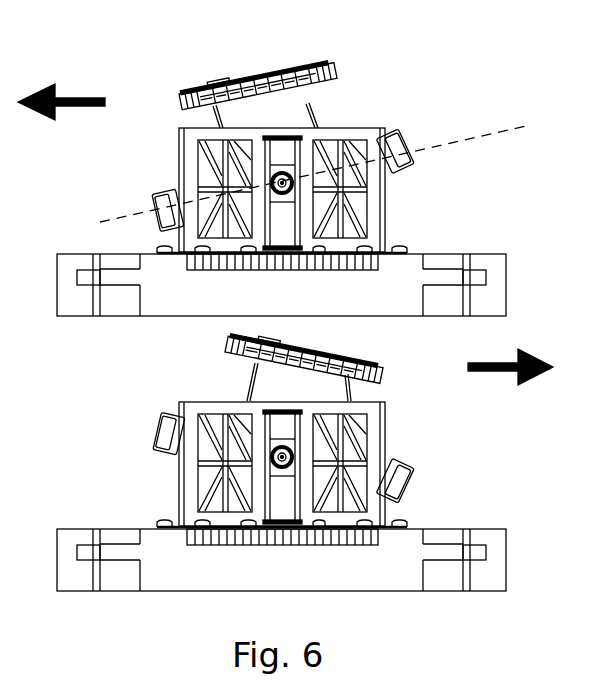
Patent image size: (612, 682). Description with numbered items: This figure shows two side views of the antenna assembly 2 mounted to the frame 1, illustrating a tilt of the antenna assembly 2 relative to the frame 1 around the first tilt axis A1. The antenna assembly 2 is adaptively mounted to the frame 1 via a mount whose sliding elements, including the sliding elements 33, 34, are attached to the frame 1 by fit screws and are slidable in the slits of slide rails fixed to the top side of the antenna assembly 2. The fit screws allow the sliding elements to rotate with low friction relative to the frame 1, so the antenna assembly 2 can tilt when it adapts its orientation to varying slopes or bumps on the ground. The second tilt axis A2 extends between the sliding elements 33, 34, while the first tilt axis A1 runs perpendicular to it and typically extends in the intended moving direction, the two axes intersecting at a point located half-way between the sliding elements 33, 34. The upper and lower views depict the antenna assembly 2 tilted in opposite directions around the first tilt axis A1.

The frame 1 is at (222, 85).
The antenna assembly 2 is at (513, 269).
The sliding element 33 is at (163, 195).
The sliding element 34 is at (392, 139).
The first tilt axis A1 is at (286, 178).
The second tilt axis A2 is at (333, 166).